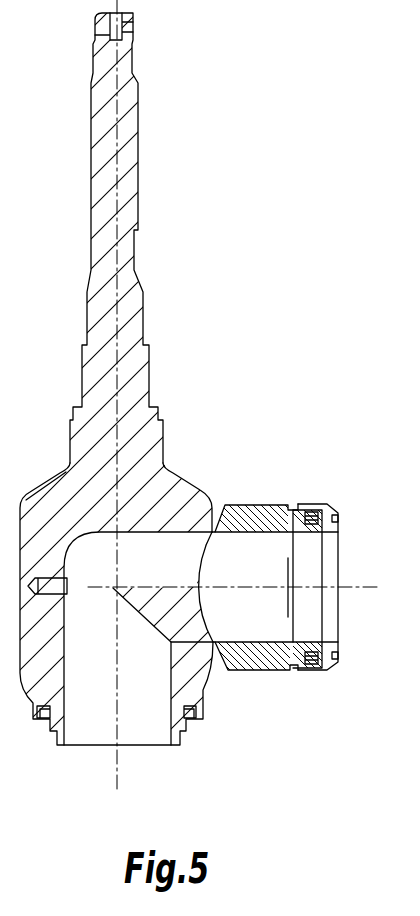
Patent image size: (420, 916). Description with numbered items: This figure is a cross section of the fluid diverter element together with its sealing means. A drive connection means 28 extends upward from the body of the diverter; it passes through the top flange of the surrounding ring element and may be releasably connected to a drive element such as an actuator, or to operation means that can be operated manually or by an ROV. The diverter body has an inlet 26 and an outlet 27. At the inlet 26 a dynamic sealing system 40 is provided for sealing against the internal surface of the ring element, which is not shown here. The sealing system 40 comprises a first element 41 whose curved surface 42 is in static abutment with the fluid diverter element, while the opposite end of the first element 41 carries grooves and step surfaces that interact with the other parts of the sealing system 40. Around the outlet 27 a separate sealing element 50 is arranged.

The inlet 26 is at (273, 560).
The outlet 27 is at (95, 723).
The drive connection means 28 is at (103, 240).
The sealing system 40 is at (313, 492).
The first element 41 is at (255, 513).
The curved surface 42 is at (195, 577).
The sealing element 50 is at (190, 723).